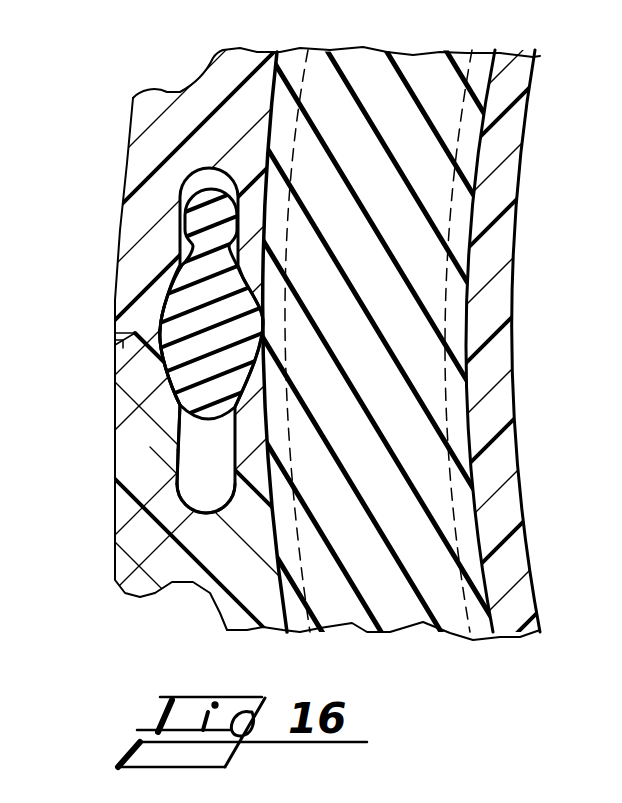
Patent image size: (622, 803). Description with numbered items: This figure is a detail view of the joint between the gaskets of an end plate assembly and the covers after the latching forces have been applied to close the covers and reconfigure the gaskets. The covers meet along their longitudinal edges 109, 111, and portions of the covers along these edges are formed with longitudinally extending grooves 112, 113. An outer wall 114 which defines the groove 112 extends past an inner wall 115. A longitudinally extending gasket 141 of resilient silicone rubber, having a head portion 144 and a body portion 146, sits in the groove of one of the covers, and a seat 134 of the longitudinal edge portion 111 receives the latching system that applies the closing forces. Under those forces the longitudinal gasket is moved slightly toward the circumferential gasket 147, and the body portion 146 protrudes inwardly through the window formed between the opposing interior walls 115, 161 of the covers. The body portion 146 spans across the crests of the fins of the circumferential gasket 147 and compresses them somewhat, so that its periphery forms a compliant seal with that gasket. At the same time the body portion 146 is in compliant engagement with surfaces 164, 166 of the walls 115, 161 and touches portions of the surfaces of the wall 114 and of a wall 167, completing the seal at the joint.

The seat 134 is at (158, 92).
The groove 113 is at (186, 178).
The head portion 144 is at (181, 221).
The wall 167 is at (140, 297).
The longitudinal edge 111 is at (126, 333).
The longitudinal edge 109 is at (115, 350).
The outer wall 114 is at (115, 367).
The body portion 146 is at (167, 362).
The longitudinally extending gasket 141 is at (178, 400).
The surface 164 is at (150, 470).
The groove 112 is at (178, 502).
The surface 166 is at (262, 272).
The circumferential gasket 147 is at (422, 277).
The interior wall 161 is at (262, 300).
The inner wall 115 is at (262, 372).